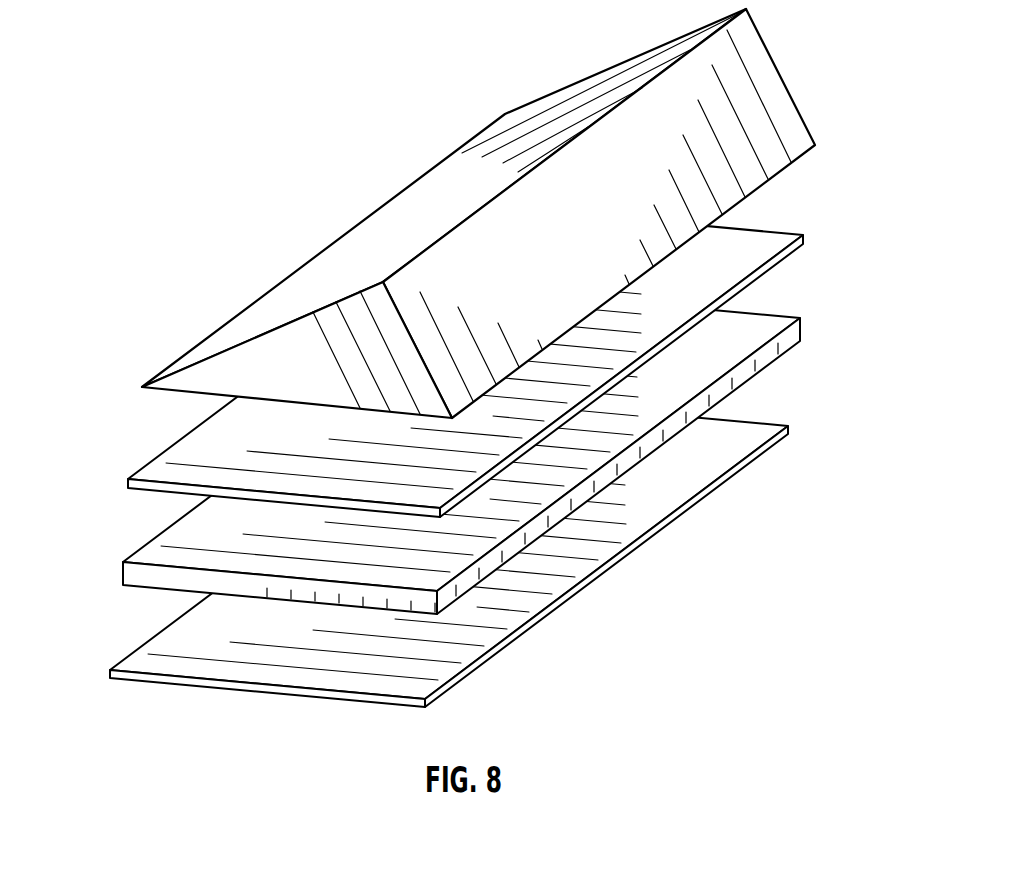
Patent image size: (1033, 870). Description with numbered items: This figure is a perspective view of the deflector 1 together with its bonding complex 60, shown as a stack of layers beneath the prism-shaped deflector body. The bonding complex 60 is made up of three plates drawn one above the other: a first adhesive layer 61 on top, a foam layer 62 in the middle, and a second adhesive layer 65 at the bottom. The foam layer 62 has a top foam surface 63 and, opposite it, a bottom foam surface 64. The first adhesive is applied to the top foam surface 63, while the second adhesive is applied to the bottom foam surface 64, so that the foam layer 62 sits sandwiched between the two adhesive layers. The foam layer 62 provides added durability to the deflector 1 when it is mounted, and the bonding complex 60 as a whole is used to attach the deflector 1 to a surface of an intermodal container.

The deflector 1 is at (814, 63).
The bonding complex 60 is at (438, 437).
The first adhesive layer 61 is at (793, 234).
The foam layer 62 is at (780, 392).
The top foam surface 63 is at (794, 316).
The bottom foam surface 64 is at (796, 348).
The second adhesive layer 65 is at (604, 593).